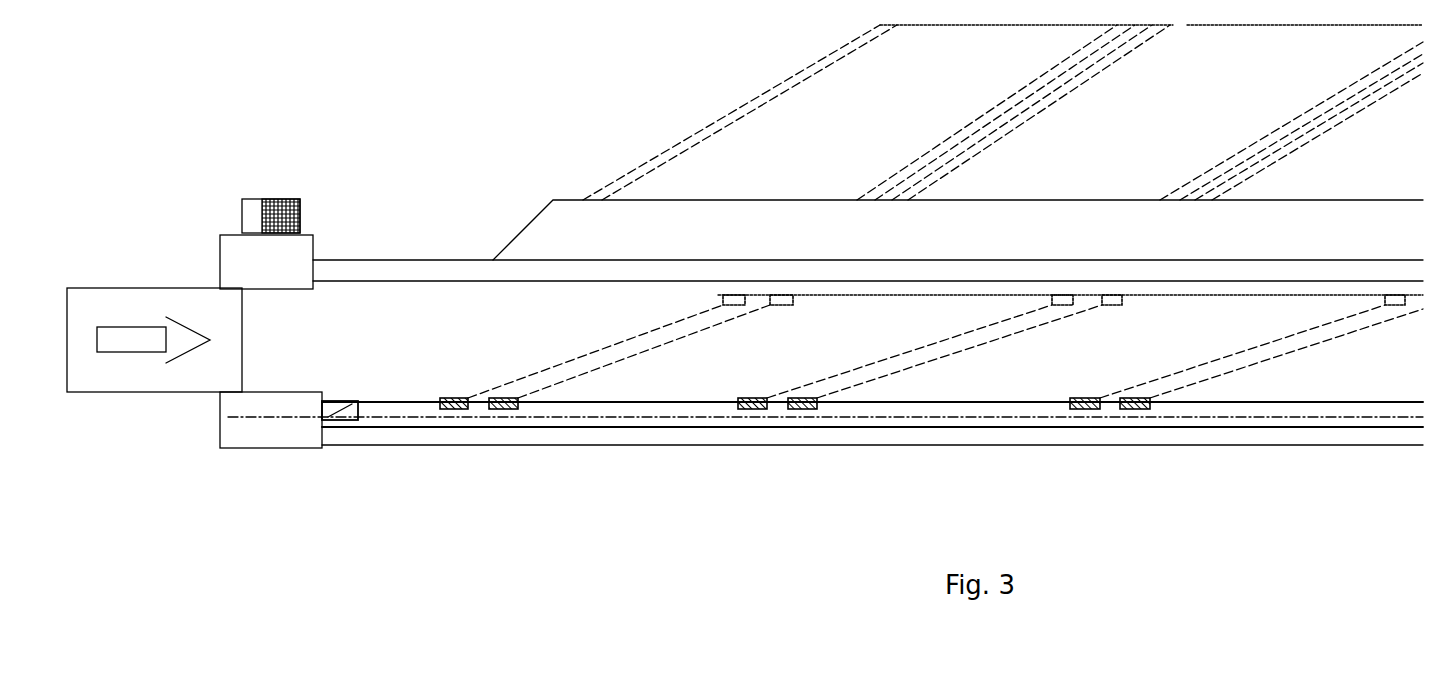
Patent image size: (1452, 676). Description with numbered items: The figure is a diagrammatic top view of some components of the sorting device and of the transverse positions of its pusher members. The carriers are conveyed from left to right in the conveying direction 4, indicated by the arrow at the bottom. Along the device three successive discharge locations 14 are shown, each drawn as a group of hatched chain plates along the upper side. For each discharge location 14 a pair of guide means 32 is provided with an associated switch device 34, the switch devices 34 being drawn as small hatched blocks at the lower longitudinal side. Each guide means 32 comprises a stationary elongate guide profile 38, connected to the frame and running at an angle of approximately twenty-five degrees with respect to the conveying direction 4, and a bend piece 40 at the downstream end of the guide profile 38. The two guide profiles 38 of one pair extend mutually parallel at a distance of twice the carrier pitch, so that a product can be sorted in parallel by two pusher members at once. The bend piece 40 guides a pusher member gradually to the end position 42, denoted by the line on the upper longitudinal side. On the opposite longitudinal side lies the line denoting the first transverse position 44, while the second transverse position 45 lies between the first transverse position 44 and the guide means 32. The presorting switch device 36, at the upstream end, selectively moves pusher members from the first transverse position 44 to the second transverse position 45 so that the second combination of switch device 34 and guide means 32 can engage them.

The discharge location 14 is at (717, 222).
The guide means 32 is at (574, 350).
The switch device 34 is at (458, 380).
The presorting switch device 36 is at (343, 434).
The guide profile 38 is at (643, 332).
The bend piece 40 is at (782, 306).
The end position 42 is at (1237, 300).
The first transverse position 44 is at (868, 419).
The second transverse position 45 is at (1223, 403).
The conveying direction 4 is at (690, 541).